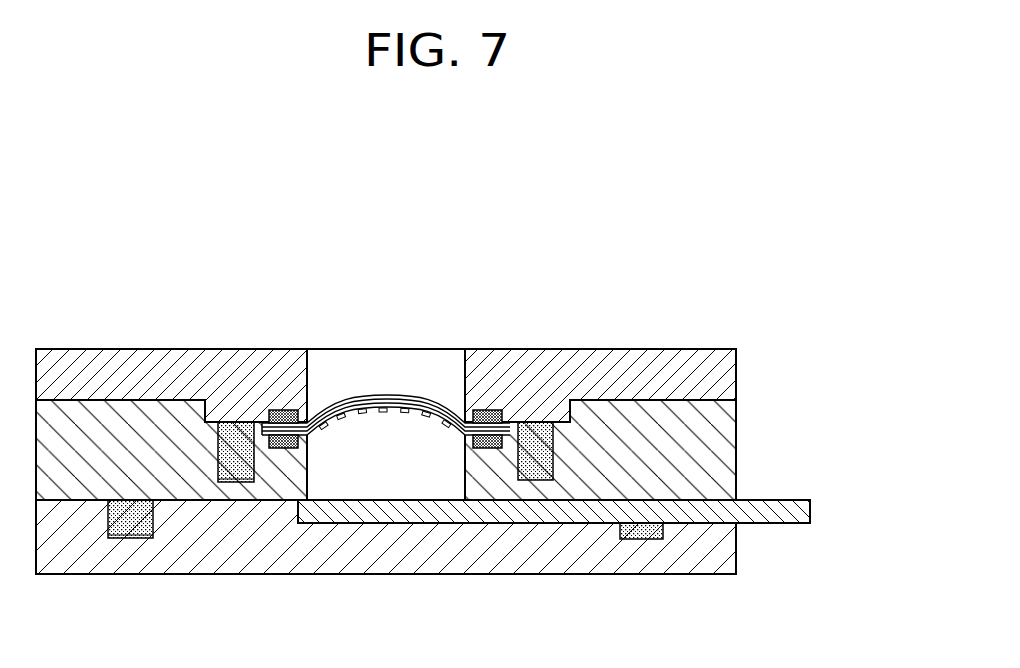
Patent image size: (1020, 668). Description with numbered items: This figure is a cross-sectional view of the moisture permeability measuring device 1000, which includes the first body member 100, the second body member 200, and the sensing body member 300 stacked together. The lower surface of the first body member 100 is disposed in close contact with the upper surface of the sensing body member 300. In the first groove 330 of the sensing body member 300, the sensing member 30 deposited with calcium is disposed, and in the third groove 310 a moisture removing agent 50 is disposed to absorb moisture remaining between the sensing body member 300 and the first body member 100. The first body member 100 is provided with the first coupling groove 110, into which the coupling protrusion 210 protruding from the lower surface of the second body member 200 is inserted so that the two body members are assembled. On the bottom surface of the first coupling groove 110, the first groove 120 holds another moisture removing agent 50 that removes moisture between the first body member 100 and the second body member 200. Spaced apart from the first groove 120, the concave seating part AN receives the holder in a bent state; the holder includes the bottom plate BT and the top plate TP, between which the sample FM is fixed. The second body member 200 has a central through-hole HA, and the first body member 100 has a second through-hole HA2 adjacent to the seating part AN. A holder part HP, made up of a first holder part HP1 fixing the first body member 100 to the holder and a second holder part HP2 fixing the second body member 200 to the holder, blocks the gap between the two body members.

The moisture permeability measuring device 1000 is at (695, 234).
The second body member 200 is at (727, 369).
The first body member 100 is at (727, 440).
The sensing body member 300 is at (727, 543).
The sensing member 30 is at (798, 515).
The first groove 330 is at (565, 525).
The third groove 310 is at (108, 521).
The moisture removing agent 50 is at (133, 525).
The first coupling groove 110 is at (222, 418).
The coupling protrusion 210 is at (232, 427).
The first groove 120 is at (540, 447).
The through-hole HA is at (404, 371).
The second through-hole HA2 is at (368, 475).
The top plate TP is at (312, 421).
The sample FM is at (345, 408).
The seating part AN is at (264, 437).
The bottom plate BT is at (447, 429).
The holder part HP is at (545, 277).
The first holder part HP1 is at (483, 412).
The second holder part HP2 is at (497, 440).